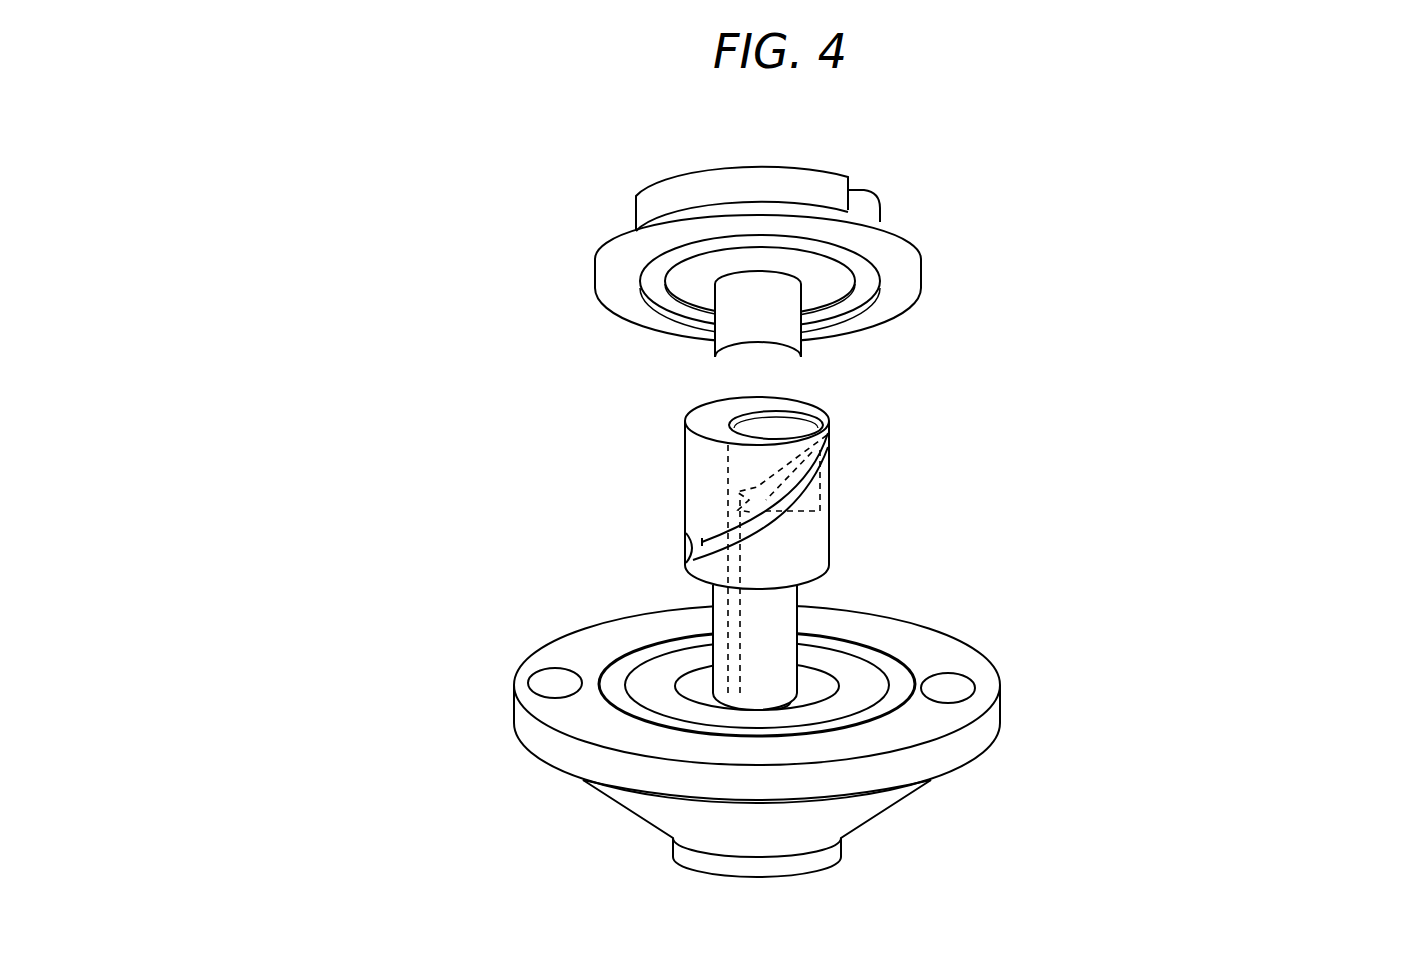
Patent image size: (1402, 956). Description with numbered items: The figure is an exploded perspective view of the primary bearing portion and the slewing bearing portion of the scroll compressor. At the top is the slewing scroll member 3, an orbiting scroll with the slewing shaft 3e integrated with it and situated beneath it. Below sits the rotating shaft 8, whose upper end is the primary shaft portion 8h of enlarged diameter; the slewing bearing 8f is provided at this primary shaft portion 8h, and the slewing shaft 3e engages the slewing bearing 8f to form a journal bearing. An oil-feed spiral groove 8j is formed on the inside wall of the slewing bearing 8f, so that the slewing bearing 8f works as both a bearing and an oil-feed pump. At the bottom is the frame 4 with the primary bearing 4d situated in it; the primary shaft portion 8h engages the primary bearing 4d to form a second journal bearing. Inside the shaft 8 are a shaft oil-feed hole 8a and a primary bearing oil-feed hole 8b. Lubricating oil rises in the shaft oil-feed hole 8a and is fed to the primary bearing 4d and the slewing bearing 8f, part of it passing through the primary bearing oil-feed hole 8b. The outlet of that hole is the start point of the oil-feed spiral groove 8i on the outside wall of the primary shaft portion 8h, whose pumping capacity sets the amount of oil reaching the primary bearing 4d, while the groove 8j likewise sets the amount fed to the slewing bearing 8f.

The slewing scroll member 3 is at (610, 238).
The slewing shaft 3e is at (780, 302).
The slewing bearing 8f is at (741, 419).
The oil-feed spiral groove 8j is at (755, 497).
The primary bearing oil-feed hole 8b is at (688, 548).
The oil-feed spiral groove 8i is at (803, 473).
The primary shaft portion 8h is at (805, 550).
The rotating shaft 8 is at (778, 628).
The frame 4 is at (943, 662).
The primary bearing 4d is at (693, 692).
The shaft oil-feed hole 8a is at (730, 652).